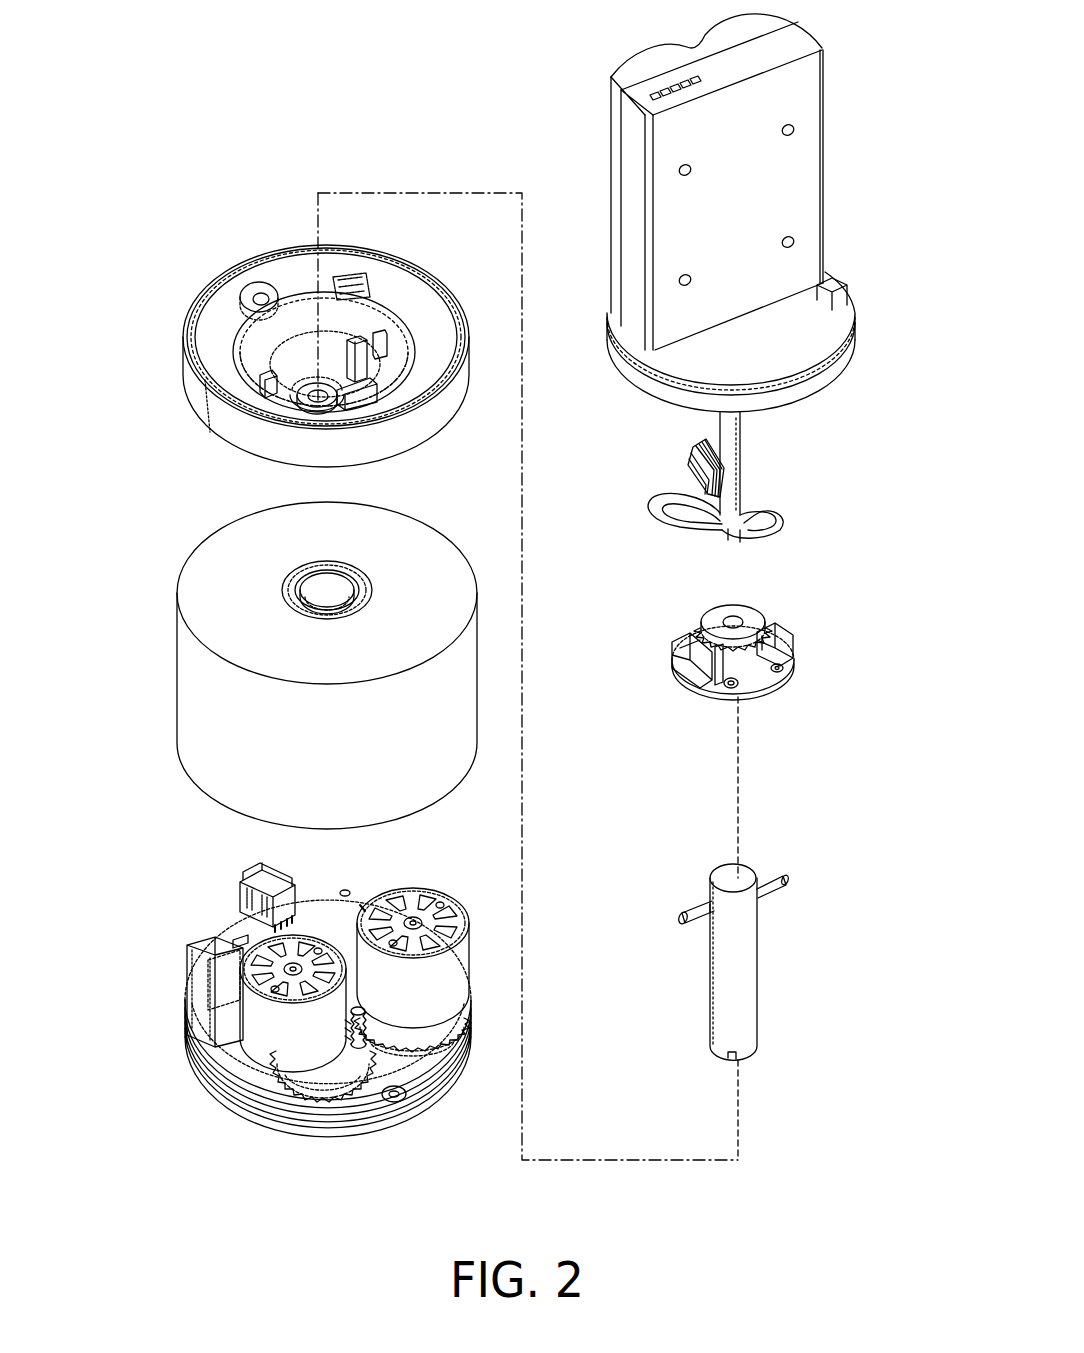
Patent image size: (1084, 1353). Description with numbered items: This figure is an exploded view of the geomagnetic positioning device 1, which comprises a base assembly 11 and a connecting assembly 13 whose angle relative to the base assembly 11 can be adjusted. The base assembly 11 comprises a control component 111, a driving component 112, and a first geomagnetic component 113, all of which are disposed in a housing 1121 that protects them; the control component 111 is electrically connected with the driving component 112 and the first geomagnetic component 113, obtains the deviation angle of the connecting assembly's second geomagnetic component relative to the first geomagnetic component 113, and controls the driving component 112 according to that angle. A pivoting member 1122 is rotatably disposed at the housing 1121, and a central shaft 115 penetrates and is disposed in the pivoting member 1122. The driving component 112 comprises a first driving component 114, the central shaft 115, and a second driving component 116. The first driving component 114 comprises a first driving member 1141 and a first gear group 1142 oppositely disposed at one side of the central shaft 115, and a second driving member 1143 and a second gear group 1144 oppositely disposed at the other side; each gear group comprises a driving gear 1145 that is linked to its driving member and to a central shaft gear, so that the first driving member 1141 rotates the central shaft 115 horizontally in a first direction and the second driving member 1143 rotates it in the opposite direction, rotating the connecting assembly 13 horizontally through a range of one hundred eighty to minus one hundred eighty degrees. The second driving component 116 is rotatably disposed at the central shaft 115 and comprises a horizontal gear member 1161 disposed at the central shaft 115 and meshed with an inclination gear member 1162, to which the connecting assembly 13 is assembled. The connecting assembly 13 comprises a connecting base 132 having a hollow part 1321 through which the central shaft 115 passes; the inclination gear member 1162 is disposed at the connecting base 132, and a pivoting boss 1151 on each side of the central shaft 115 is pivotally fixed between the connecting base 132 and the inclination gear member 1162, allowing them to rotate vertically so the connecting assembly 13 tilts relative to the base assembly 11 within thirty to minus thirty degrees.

The geomagnetic positioning device 1 is at (234, 98).
The base assembly 11 is at (442, 862).
The control component 111 is at (228, 903).
The driving component 112 is at (478, 890).
The first geomagnetic component 113 is at (250, 938).
The first driving component 114 is at (240, 1172).
The first driving member 1141 is at (267, 1025).
The first gear group 1142 is at (307, 1084).
The second driving member 1143 is at (407, 1007).
The second gear group 1144 is at (430, 1040).
The driving gear 1145 is at (368, 1022).
The central shaft 115 is at (727, 983).
The pivoting boss 1151 is at (697, 908).
The second driving component 116 is at (607, 610).
The horizontal gear member 1161 is at (713, 612).
The inclination gear member 1162 is at (688, 642).
The housing 1121 is at (212, 564).
The pivoting member 1122 is at (305, 573).
The connecting assembly 13 is at (568, 74).
The connecting base 132 is at (297, 347).
The hollow part 1321 is at (297, 388).